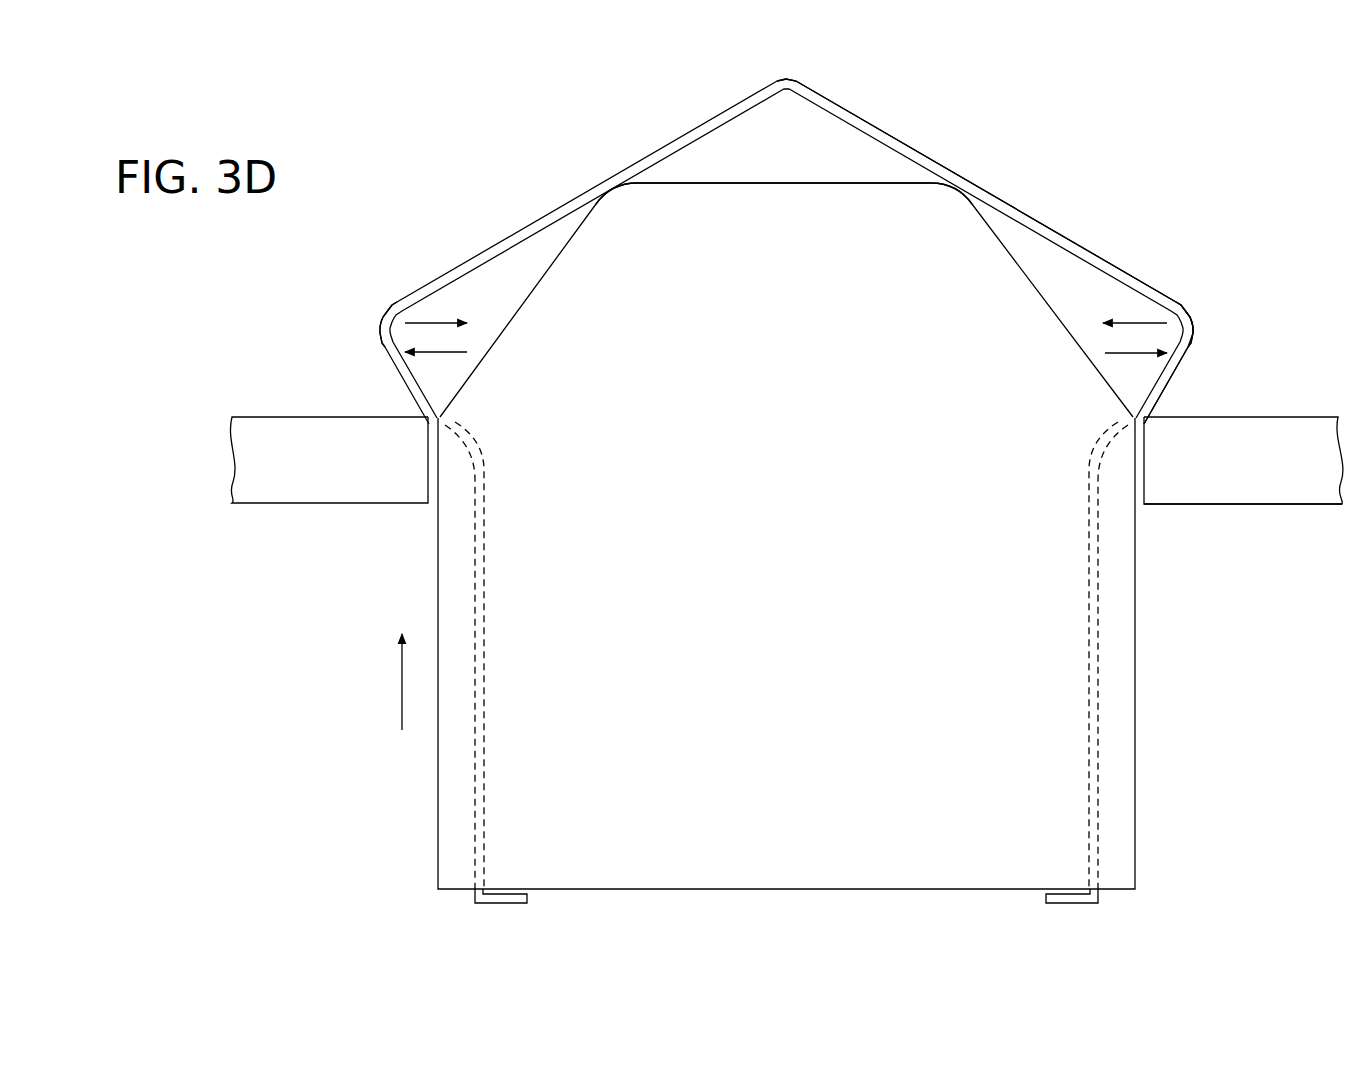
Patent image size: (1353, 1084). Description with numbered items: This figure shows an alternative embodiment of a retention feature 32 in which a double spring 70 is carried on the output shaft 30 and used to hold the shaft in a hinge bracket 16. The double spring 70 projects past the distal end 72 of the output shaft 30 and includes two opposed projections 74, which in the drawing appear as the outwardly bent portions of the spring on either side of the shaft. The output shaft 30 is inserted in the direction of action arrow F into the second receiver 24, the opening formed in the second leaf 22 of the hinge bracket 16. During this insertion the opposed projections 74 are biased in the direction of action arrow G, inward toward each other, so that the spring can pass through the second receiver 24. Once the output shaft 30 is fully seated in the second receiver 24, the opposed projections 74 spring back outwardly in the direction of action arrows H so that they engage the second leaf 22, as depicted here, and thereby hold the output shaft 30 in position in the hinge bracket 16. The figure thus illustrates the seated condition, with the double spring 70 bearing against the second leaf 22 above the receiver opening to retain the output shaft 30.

The double spring 70 is at (817, 88).
The distal end 72 is at (848, 183).
The output shaft 30 is at (615, 227).
The opposed projections 74 is at (385, 320).
The retention feature 32 is at (1110, 188).
The second leaf 22 is at (300, 420).
The second receiver 24 is at (430, 453).
The hinge bracket 16 is at (1222, 503).
The action arrow G is at (435, 323).
The action arrows H is at (442, 353).
The action arrow F is at (402, 688).